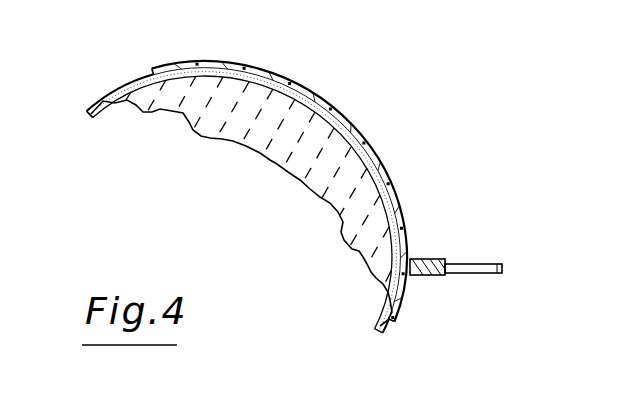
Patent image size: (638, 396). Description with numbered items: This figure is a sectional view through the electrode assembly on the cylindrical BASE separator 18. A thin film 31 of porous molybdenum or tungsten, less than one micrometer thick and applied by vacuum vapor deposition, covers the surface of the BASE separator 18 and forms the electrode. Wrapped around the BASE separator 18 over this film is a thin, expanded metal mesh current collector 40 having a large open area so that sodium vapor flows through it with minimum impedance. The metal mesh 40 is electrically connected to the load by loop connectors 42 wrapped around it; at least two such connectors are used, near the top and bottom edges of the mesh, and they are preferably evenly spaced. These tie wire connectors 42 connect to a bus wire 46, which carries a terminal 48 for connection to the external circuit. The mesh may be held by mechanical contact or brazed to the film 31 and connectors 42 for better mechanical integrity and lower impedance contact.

The BASE separator 18 is at (294, 174).
The thin film 31 is at (117, 90).
The metal mesh current collector 40 is at (344, 116).
The loop connectors 42 is at (299, 85).
The bus wire 46 is at (433, 258).
The terminal 48 is at (490, 274).